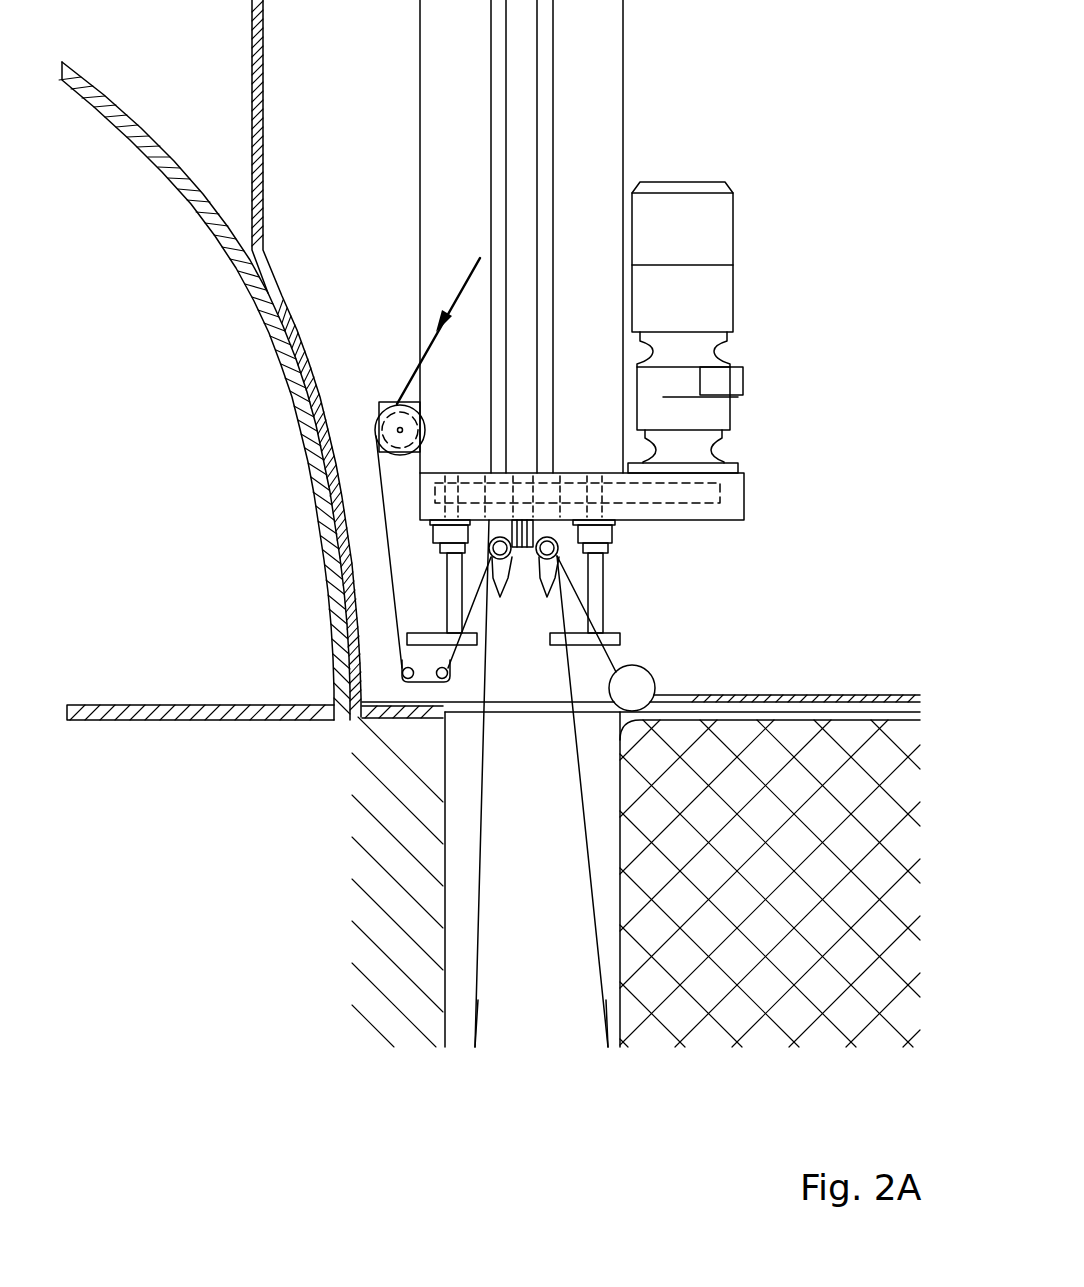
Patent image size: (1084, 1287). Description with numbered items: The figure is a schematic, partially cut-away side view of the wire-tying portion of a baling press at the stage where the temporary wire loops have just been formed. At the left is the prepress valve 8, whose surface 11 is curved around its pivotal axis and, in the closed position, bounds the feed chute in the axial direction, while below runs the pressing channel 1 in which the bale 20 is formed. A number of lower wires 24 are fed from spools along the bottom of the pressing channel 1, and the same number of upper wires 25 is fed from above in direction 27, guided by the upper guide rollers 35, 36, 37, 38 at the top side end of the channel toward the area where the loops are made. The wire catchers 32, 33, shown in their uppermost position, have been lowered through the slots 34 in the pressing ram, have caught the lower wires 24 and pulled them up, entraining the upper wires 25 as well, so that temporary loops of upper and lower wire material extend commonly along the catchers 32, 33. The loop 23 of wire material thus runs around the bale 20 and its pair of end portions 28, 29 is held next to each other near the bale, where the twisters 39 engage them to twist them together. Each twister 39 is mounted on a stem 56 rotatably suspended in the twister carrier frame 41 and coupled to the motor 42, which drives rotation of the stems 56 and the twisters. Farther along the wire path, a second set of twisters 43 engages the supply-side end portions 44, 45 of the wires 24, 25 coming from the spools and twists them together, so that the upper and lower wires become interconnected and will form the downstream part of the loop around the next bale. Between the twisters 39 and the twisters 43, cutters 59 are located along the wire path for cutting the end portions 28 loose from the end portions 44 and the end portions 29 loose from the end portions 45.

The pressing channel 1 is at (664, 711).
The prepress valve 8 is at (143, 132).
The curved surface 11 is at (110, 97).
The bale 20 is at (730, 842).
The loop 23 is at (883, 712).
The lower wires 24 is at (600, 990).
The upper wires 25 is at (420, 402).
The feed direction 27 is at (463, 280).
The end portion 28 is at (565, 618).
The end portion 29 is at (602, 667).
The wire catcher 32 is at (499, 29).
The wire catcher 33 is at (545, 29).
The slots 34 is at (540, 842).
The upper guide roller 35 is at (378, 425).
The upper guide roller 36 is at (438, 672).
The upper guide roller 37 is at (405, 668).
The upper guide roller 38 is at (650, 668).
The twister 39 is at (610, 628).
The twister carrier frame 41 is at (728, 505).
The motor 42 is at (723, 230).
The second twister 43 is at (422, 632).
The end portion 44 is at (487, 583).
The end portion 45 is at (485, 617).
The stem 56 is at (603, 568).
The cutters 59 is at (523, 547).